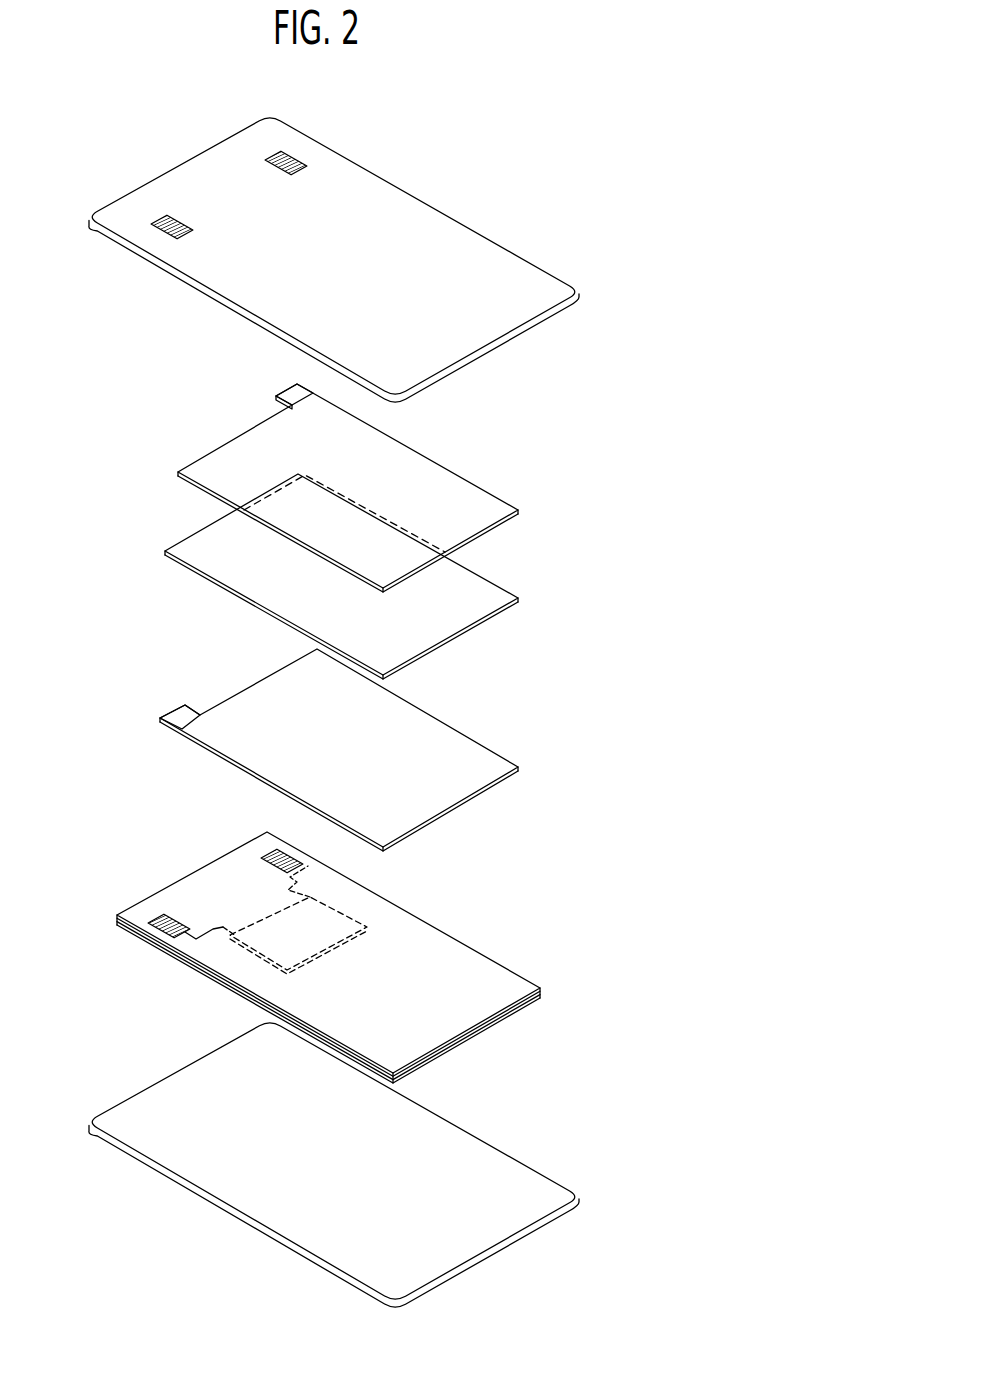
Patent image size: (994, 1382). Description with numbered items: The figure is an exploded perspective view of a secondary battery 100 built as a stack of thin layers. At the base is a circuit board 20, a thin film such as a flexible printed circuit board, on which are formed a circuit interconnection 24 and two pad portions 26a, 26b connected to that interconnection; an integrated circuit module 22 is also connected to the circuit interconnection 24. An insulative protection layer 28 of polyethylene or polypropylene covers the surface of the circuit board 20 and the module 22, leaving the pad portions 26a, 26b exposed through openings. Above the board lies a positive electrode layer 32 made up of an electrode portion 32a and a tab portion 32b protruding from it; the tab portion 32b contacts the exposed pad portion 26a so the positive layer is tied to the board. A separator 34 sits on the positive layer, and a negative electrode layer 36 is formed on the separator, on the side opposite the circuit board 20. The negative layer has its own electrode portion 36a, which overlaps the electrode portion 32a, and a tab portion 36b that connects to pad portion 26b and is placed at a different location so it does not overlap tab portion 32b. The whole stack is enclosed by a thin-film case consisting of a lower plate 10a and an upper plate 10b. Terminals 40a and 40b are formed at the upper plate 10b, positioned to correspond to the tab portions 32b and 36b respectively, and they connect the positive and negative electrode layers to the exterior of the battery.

The secondary battery 100 is at (603, 163).
The lower plate 10a is at (497, 1163).
The upper plate 10b is at (553, 285).
The circuit board 20 is at (500, 962).
The integrated circuit (IC) module 22 is at (277, 927).
The circuit interconnection 24 is at (212, 930).
The pad portion 26a is at (165, 917).
The pad portion 26b is at (278, 855).
The insulative protection layer 28 is at (445, 948).
The positive electrode layer 32 is at (495, 750).
The electrode portion 32a is at (413, 804).
The tab portion 32b is at (175, 707).
The separator 34 is at (492, 593).
The negative electrode layer 36 is at (432, 458).
The electrode portion 36a is at (457, 497).
The tab portion 36b is at (294, 384).
The terminal 40a is at (167, 219).
The terminal 40b is at (275, 155).